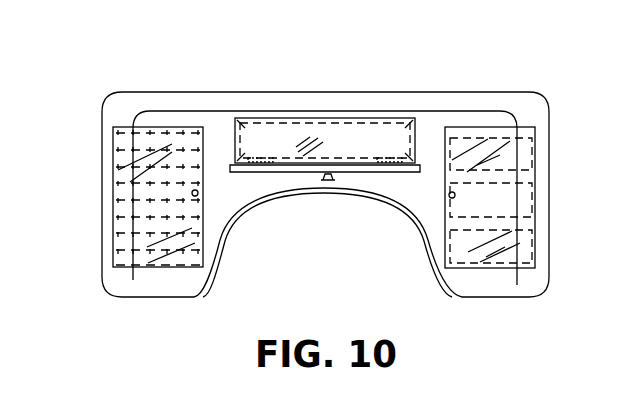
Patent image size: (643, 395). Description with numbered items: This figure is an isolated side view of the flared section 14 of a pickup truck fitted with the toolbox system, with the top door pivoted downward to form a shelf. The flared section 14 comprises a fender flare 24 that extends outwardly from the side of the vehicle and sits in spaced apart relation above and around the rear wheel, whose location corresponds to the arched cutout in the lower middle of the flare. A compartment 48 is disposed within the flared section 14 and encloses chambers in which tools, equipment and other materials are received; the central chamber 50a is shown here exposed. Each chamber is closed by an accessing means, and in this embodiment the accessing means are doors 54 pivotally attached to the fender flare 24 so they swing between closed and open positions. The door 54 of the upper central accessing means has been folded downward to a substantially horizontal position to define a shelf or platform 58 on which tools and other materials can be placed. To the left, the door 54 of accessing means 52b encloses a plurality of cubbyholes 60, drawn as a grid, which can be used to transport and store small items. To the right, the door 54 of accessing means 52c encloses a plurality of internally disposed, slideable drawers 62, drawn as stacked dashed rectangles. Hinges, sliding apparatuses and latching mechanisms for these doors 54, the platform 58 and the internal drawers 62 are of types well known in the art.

The flared section 14 is at (553, 99).
The fender flare 24 is at (247, 186).
The compartment 48 is at (422, 134).
The internally disposed slideable drawers 62 is at (517, 205).
The accessing means 52b is at (142, 127).
The accessing means 52c is at (499, 277).
The cubbyholes 60 is at (138, 190).
The door 54 is at (358, 167).
The chamber 50a is at (281, 143).
The shelf or platform 58 is at (233, 160).